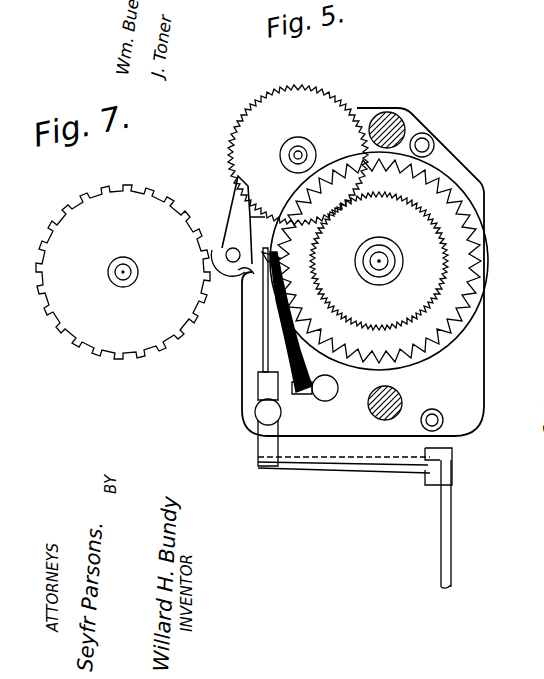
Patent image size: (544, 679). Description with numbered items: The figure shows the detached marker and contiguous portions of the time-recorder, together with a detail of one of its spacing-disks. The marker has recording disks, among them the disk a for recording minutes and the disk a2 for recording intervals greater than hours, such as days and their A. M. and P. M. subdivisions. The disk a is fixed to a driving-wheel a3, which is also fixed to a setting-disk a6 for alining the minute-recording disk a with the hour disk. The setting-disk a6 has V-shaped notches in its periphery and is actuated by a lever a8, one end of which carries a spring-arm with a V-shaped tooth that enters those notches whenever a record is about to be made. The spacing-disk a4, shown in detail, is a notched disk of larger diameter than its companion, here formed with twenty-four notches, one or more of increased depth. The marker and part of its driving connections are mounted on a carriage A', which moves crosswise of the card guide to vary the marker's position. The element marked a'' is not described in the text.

In FIG. 5, the disk a2 is at (317, 115).
In FIG. 5, the driving-wheel a3 is at (430, 255).
In FIG. 5, the disk a is at (394, 261).
In FIG. 5, the setting-disk a6 is at (439, 313).
In FIG. 5, the pawl lever a'' is at (267, 321).
In FIG. 7, the spacing-disk a4 is at (141, 313).
In FIG. 5, the lever a8 is at (358, 467).
In FIG. 5, the carriage A' is at (366, 276).